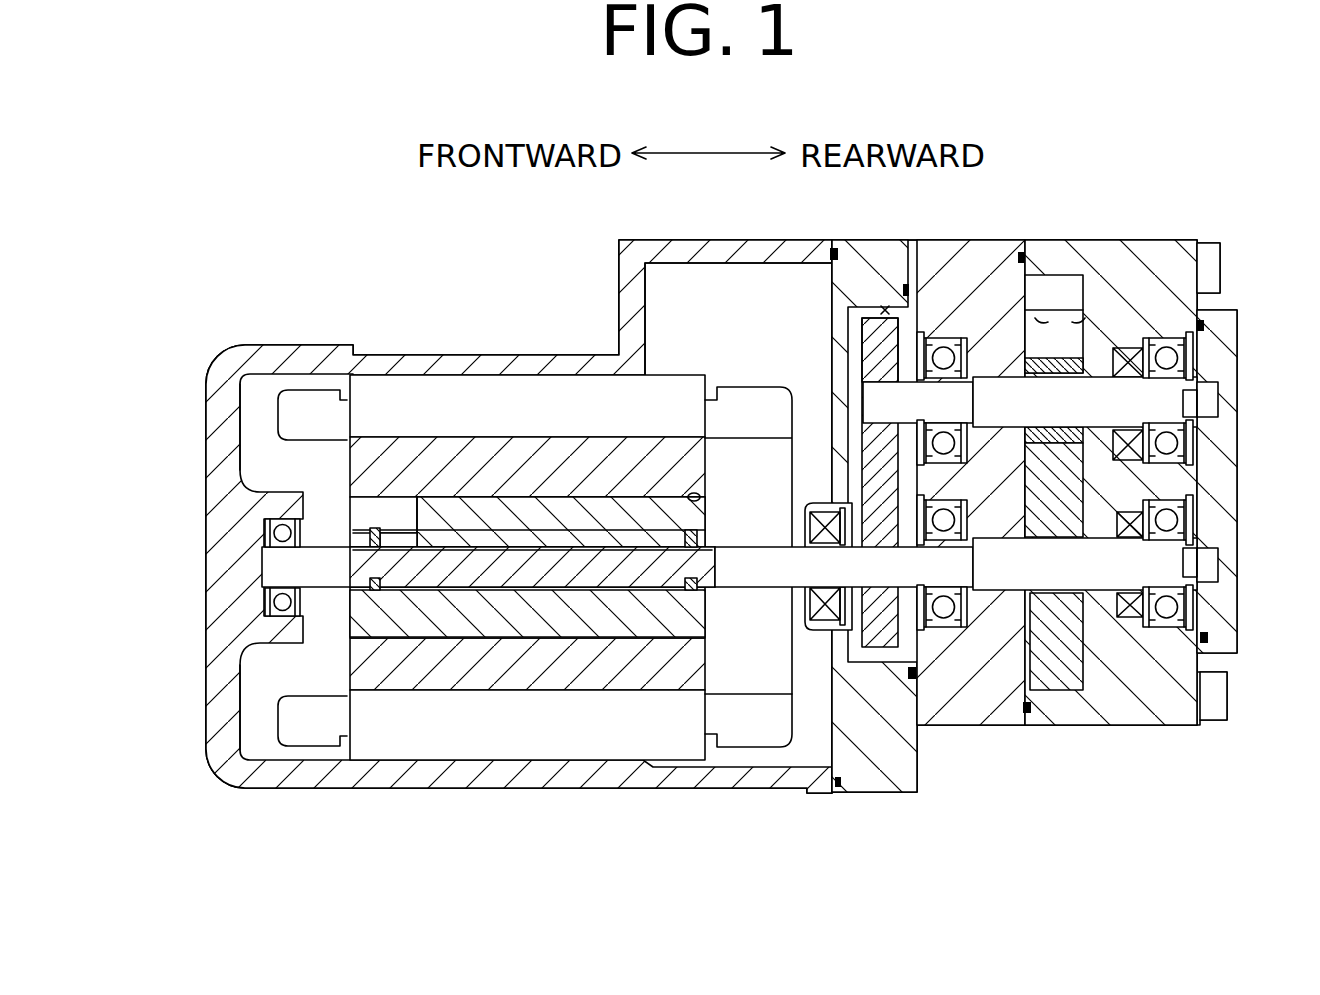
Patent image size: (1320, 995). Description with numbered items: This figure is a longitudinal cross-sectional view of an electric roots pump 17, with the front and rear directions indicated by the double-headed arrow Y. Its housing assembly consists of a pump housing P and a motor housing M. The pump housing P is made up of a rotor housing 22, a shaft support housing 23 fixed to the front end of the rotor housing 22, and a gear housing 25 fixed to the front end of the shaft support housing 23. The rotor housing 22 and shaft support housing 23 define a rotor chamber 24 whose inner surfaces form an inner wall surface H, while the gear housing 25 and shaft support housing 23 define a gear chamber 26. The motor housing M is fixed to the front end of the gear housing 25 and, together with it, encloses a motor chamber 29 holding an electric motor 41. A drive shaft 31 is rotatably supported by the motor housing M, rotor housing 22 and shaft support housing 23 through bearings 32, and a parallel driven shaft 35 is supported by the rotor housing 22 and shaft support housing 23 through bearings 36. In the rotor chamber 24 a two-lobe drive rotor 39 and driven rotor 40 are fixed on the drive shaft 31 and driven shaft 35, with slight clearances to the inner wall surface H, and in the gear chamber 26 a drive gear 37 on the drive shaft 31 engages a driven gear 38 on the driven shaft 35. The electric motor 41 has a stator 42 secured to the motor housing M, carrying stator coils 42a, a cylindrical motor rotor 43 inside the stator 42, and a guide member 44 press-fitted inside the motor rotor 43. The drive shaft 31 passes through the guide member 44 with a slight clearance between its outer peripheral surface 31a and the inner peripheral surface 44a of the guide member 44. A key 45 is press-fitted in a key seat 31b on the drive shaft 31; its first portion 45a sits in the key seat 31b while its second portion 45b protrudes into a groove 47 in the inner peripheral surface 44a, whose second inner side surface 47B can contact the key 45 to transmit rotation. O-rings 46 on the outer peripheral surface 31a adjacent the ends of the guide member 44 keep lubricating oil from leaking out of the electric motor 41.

The electric roots pump 17 is at (1027, 184).
The rotor housing 22 is at (1055, 726).
The shaft support housing 23 is at (967, 726).
The rotor chamber 24 is at (1066, 305).
The gear housing 25 is at (872, 793).
The gear chamber 26 is at (885, 305).
The motor chamber 29 is at (768, 306).
The drive shaft 31 is at (691, 554).
The outer peripheral surface 31a is at (680, 515).
The key seat 31b is at (643, 556).
The bearings 32 is at (265, 520).
The driven shaft 35 is at (1005, 380).
The bearings 36 is at (948, 337).
The drive gear 37 is at (877, 643).
The driven gear 38 is at (868, 332).
The drive rotor 39 is at (1078, 648).
The driven rotor 40 is at (1098, 338).
The electric motor 41 is at (322, 764).
The stator 42 is at (491, 766).
The stator coils 42a is at (756, 747).
The motor rotor 43 is at (540, 690).
The guide member 44 is at (697, 492).
The inner peripheral surface 44a is at (393, 542).
The key 45 is at (527, 546).
The first portion 45a is at (556, 560).
The second portion 45b is at (535, 540).
The O-rings 46 is at (698, 532).
The groove 47 is at (425, 515).
The second inner side surface 47B is at (648, 537).
The inner wall surface H is at (1085, 322).
The motor housing M is at (675, 790).
The pump housing P is at (1066, 829).
The double-headed arrow Y is at (708, 153).